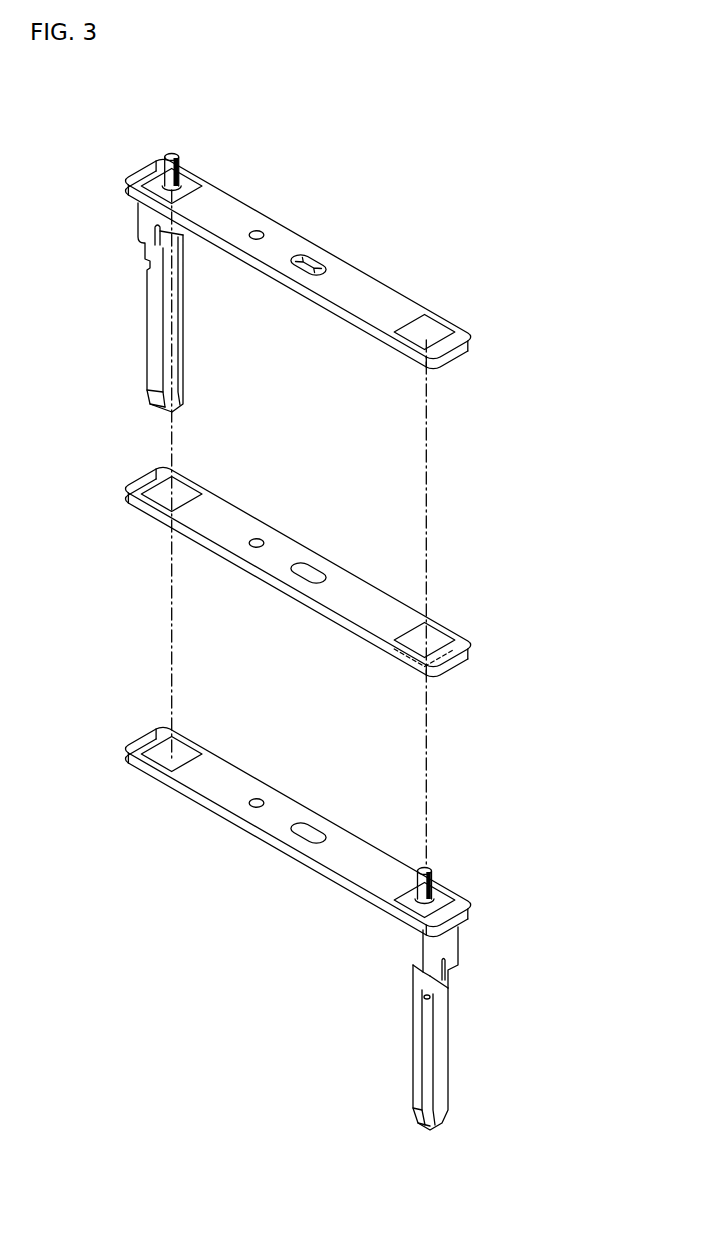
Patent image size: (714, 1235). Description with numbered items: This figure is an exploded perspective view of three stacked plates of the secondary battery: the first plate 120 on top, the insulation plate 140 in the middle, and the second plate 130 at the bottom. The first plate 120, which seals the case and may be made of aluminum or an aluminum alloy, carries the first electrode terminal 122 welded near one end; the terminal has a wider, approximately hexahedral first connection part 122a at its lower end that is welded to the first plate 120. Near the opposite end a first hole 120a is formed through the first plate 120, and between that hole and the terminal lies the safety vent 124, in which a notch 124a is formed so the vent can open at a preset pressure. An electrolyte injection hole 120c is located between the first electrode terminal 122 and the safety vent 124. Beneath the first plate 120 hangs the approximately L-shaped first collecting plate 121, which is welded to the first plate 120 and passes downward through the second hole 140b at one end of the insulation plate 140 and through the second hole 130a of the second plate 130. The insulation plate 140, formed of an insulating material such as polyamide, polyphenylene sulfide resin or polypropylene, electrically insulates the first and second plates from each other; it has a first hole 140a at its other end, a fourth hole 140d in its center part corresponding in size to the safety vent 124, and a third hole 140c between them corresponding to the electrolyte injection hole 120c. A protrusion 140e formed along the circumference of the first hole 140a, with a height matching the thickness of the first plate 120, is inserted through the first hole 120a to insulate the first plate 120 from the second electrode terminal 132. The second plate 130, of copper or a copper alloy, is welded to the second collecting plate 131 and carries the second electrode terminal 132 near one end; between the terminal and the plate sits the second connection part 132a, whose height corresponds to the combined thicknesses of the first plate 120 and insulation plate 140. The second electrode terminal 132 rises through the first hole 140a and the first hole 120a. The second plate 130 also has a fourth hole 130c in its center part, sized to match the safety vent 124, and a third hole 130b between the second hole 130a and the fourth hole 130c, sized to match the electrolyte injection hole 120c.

The first plate 120 is at (476, 336).
The first hole 120a is at (440, 322).
The electrolyte injection hole 120c is at (258, 229).
The first collecting plate 121 is at (140, 213).
The first electrode terminal 122 is at (172, 153).
The first connection part 122a is at (187, 180).
The safety vent 124 is at (305, 257).
The notch 124a is at (318, 263).
The second plate 130 is at (477, 903).
The second hole 130a is at (185, 752).
The third hole 130b is at (258, 800).
The fourth hole 130c is at (312, 830).
The second collecting plate 131 is at (455, 940).
The second electrode terminal 132 is at (428, 868).
The second connection part 132a is at (443, 893).
The insulation plate 140 is at (476, 645).
The first hole 140a is at (440, 640).
The second hole 140b is at (183, 490).
The third hole 140c is at (258, 539).
The fourth hole 140d is at (312, 570).
The protrusion 140e is at (443, 657).